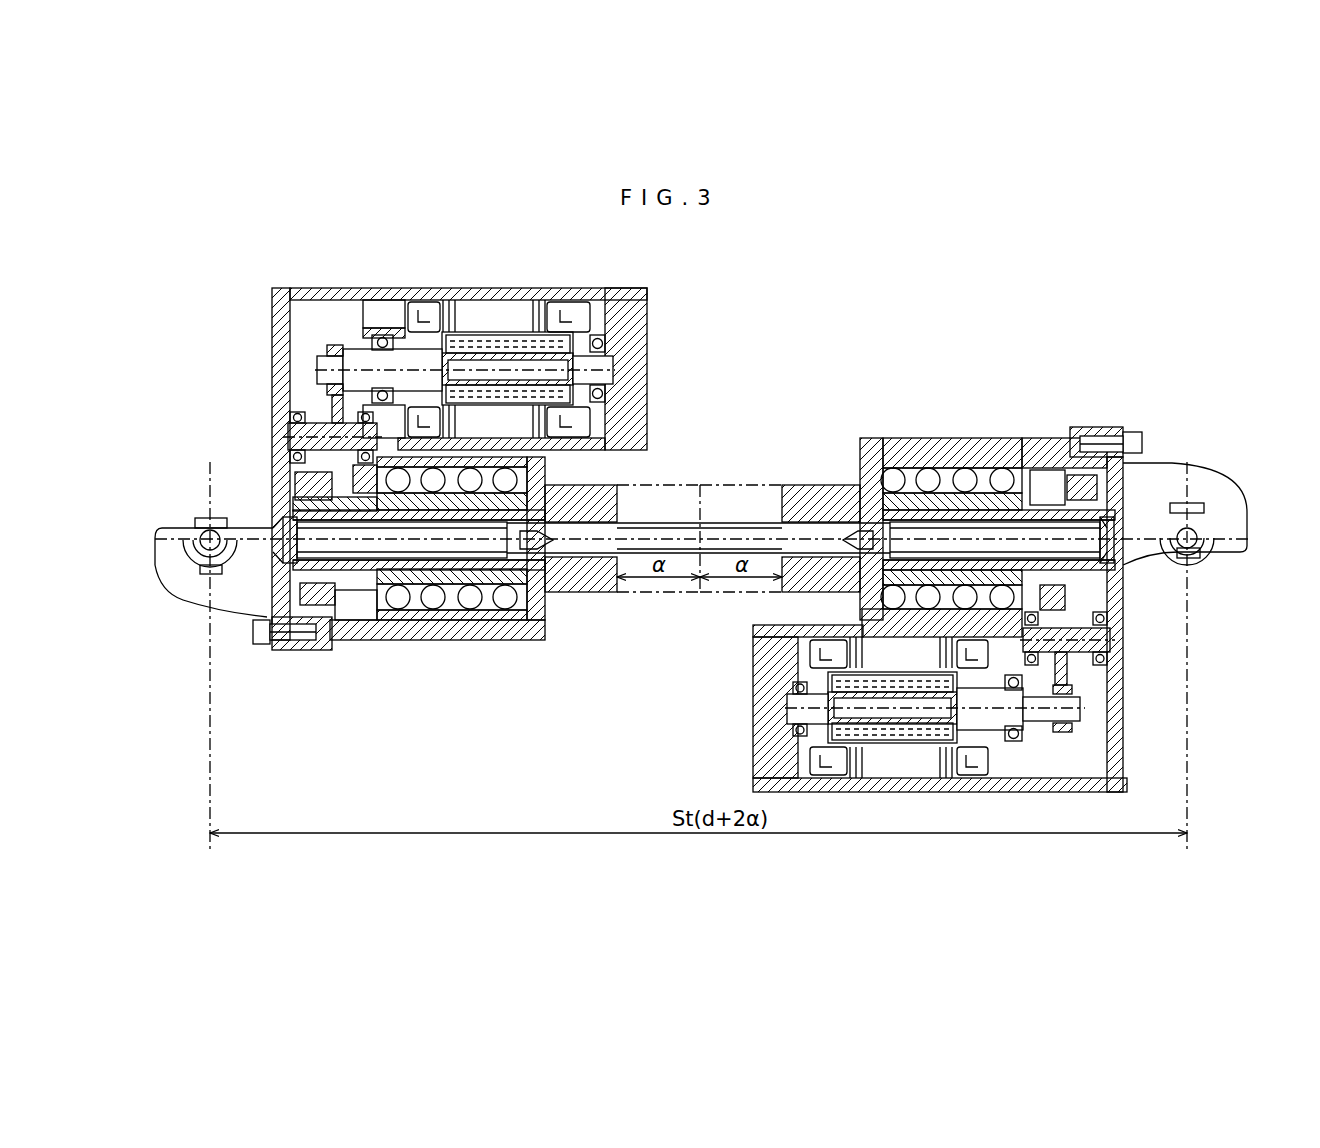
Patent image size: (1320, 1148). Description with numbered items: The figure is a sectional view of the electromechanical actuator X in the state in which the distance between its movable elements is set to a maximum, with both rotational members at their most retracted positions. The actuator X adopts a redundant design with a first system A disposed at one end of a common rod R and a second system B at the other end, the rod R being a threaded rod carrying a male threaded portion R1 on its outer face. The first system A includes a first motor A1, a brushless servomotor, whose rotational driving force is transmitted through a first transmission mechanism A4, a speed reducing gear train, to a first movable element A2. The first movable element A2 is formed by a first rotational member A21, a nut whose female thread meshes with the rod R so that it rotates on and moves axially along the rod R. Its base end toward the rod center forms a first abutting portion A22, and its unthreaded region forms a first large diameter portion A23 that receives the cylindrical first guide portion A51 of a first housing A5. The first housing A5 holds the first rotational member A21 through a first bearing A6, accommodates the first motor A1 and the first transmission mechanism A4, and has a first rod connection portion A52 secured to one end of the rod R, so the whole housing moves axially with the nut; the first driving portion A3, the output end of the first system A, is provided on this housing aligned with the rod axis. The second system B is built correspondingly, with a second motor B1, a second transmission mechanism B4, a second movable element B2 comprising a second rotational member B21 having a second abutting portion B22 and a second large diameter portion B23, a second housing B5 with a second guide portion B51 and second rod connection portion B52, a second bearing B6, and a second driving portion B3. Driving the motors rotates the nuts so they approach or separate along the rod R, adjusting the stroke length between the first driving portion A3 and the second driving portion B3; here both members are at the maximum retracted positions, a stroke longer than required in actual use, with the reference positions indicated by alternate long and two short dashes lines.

The electromechanical actuator X is at (777, 325).
The first system A is at (283, 658).
The first motor A1 is at (498, 298).
The first movable element A2 is at (588, 597).
The first rotational member A21 is at (657, 600).
The first abutting portion A22 is at (618, 500).
The first large diameter portion A23 is at (376, 620).
The first driving portion A3 is at (205, 556).
The first transmission mechanism A4 is at (318, 405).
The first housing A5 is at (268, 418).
The first guide portion A51 is at (292, 528).
The first rod connection portion A52 is at (507, 620).
The first bearing A6 is at (447, 622).
The rod R is at (722, 520).
The male threaded portion R1 is at (690, 518).
The second system B is at (1083, 410).
The second motor B1 is at (805, 766).
The second movable element B2 is at (826, 483).
The second rotational member B21 is at (752, 482).
The second abutting portion B22 is at (780, 592).
The second large diameter portion B23 is at (1000, 500).
The second driving portion B3 is at (1198, 545).
The second transmission mechanism B4 is at (1072, 672).
The second housing B5 is at (1128, 660).
The second guide portion B51 is at (1105, 560).
The second rod connection portion B52 is at (905, 478).
The second bearing B6 is at (860, 590).